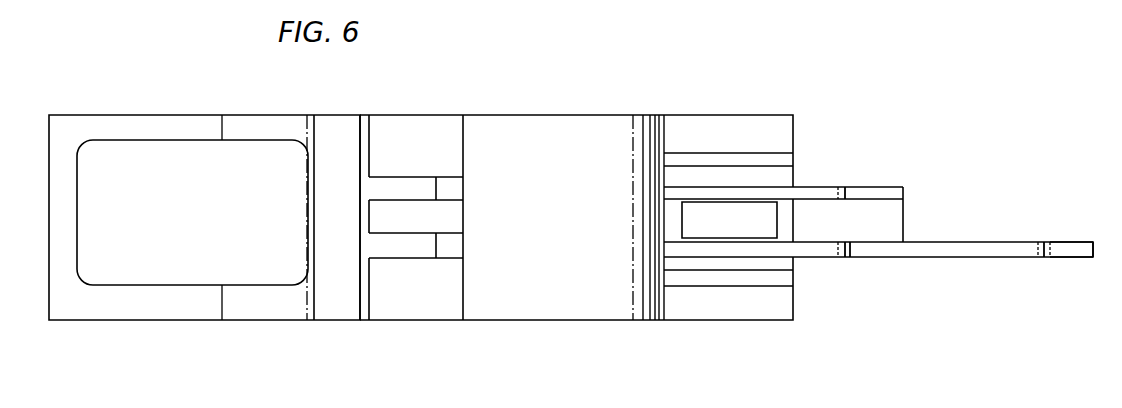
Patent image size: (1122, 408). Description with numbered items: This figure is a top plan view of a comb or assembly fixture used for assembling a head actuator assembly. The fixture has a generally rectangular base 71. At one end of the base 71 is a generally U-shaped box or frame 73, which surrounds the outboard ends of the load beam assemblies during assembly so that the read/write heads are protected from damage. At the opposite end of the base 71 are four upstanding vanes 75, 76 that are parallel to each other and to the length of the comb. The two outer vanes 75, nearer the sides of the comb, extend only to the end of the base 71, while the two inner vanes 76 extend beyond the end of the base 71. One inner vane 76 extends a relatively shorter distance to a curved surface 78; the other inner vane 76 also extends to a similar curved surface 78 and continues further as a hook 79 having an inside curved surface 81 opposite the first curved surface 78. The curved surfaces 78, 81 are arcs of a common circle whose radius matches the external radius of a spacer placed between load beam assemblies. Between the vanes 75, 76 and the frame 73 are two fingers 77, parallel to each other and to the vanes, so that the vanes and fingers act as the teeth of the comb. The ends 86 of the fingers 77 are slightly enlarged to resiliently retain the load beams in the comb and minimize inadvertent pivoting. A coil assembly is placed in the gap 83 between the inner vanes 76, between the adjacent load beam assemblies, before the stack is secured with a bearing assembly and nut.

The base 71 is at (795, 307).
The frame 73 is at (117, 121).
The outer vanes 75 is at (790, 160).
The inner vanes 76 is at (807, 193).
The fingers 77 is at (458, 190).
The curved surface 78 is at (838, 178).
The hook 79 is at (1063, 260).
The inside curved surface 81 is at (1053, 242).
The gap 83 is at (898, 212).
The ends of the fingers 86 is at (452, 176).